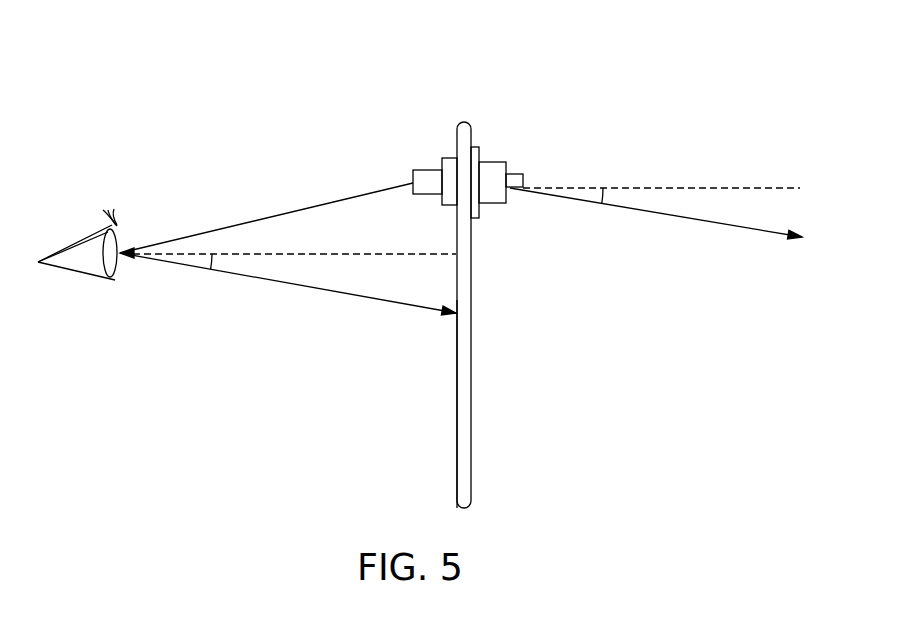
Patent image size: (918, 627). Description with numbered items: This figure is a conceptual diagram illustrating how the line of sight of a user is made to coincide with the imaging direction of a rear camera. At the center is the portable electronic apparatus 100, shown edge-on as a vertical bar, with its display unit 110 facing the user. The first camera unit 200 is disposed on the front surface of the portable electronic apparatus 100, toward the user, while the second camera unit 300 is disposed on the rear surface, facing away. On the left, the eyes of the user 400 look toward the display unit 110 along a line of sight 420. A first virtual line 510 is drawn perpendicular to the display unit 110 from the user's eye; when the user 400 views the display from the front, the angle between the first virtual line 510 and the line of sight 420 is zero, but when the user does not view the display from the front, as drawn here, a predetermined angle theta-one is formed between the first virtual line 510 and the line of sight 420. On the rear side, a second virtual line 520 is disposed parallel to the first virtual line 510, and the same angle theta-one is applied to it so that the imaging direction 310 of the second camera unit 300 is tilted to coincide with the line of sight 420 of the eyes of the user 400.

The portable electronic apparatus 100 is at (467, 122).
The display unit 110 is at (457, 380).
The first camera unit 200 is at (450, 157).
The second camera unit 300 is at (493, 170).
The imaging direction 310 is at (682, 220).
The user 400 is at (90, 272).
The line of sight 420 is at (320, 292).
The first virtual line 510 is at (373, 257).
The second virtual line 520 is at (673, 188).